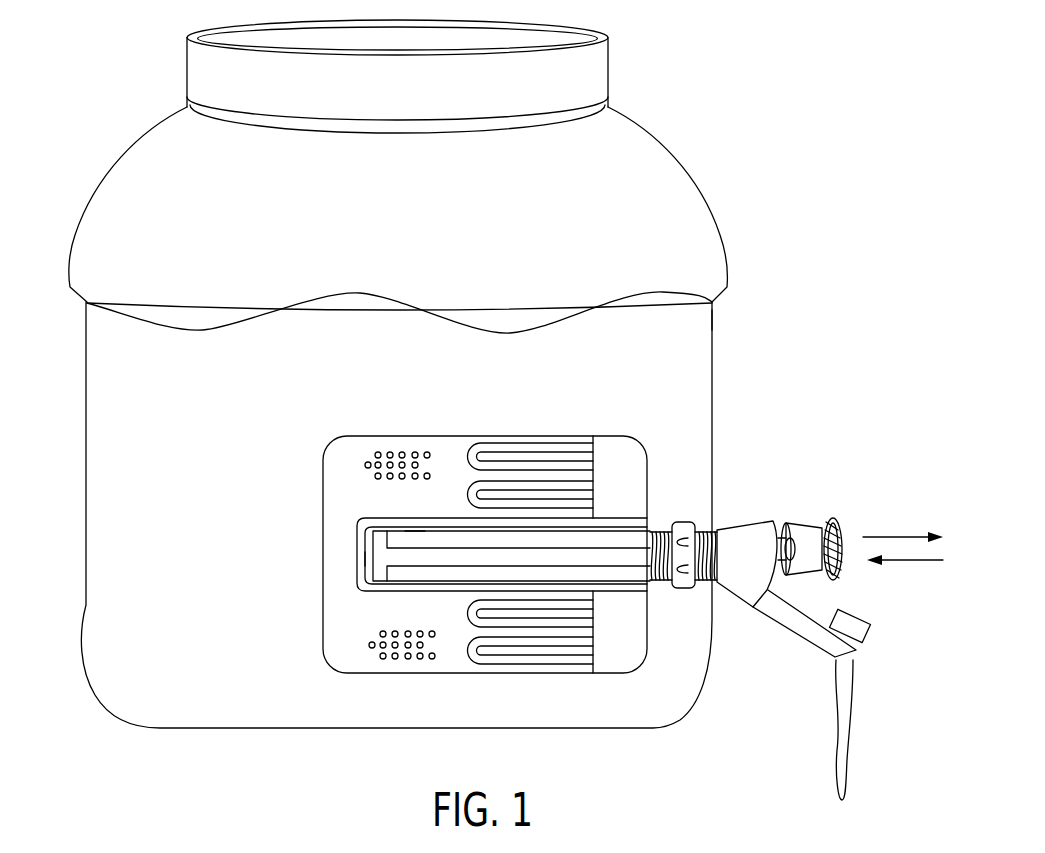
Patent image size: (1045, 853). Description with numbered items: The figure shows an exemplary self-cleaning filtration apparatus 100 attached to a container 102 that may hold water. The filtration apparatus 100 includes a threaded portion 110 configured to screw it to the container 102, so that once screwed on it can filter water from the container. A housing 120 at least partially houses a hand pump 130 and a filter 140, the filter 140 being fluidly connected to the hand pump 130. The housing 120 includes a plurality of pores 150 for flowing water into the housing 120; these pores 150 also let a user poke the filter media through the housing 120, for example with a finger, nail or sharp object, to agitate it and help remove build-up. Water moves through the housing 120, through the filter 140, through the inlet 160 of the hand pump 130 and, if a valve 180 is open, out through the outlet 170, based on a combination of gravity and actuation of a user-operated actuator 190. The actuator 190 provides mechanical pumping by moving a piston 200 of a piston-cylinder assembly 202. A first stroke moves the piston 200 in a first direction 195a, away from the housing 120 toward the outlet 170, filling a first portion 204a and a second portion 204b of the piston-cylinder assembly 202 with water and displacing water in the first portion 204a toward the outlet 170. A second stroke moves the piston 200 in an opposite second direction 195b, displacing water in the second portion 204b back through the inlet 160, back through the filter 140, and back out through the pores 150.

The self-cleaning filtration apparatus 100 is at (798, 561).
The container 102 is at (123, 148).
The threaded portion 110 is at (712, 585).
The housing 120 is at (353, 673).
The hand pump 130 is at (755, 490).
The filter 140 is at (560, 635).
The plurality of pores 150 is at (407, 658).
The inlet 160 is at (362, 540).
The outlet 170 is at (855, 657).
The valve 180 is at (867, 635).
The user-operated actuator 190 is at (813, 520).
The first direction 195a is at (898, 537).
The second direction 195b is at (898, 560).
The piston 200 is at (435, 557).
The piston-cylinder assembly 202 is at (620, 520).
The first portion 204a is at (413, 537).
The second portion 204b is at (368, 560).